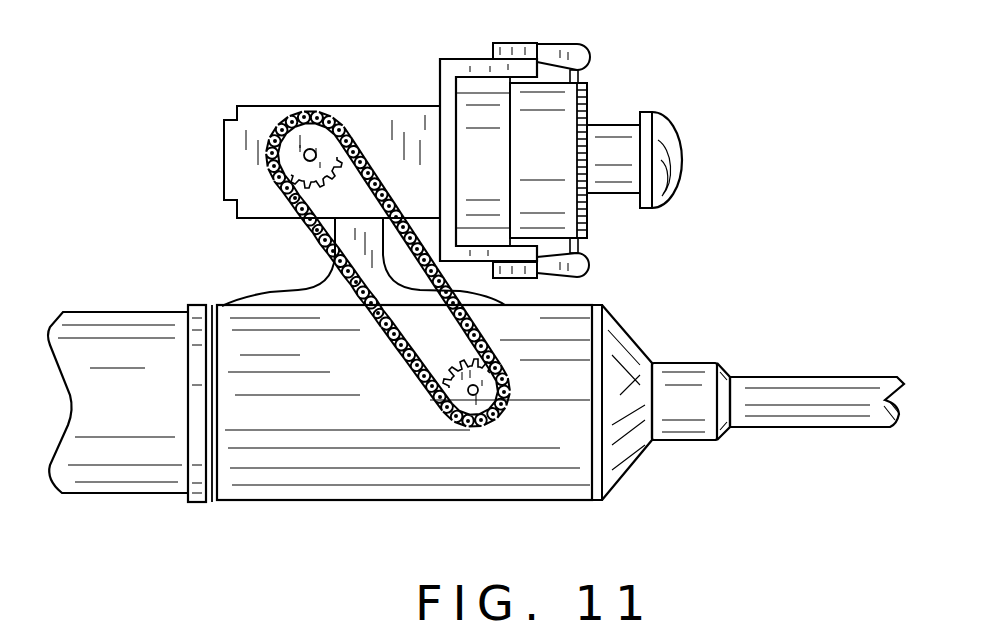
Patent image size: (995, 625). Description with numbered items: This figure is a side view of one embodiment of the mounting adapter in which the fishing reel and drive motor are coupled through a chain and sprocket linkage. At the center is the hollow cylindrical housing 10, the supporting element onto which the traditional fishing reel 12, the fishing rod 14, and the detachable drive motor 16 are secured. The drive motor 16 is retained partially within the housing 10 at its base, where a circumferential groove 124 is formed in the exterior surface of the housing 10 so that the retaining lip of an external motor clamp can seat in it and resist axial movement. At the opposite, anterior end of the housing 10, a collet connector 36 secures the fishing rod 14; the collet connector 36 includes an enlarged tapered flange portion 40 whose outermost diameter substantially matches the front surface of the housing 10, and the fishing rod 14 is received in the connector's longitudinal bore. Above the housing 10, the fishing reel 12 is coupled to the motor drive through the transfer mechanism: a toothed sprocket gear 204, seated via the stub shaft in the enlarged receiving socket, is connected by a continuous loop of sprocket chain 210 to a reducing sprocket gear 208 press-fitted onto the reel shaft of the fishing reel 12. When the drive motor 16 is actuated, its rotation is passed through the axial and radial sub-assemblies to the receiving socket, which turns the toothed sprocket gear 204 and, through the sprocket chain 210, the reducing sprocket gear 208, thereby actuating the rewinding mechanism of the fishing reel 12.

The hollow cylindrical housing 10 is at (413, 462).
The fishing reel 12 is at (368, 84).
The fishing rod 14 is at (778, 376).
The drive motor 16 is at (125, 478).
The collet connector 36 is at (678, 385).
The tapered flange portion 40 is at (618, 353).
The circumferential groove 124 is at (213, 490).
The toothed sprocket gear 204 is at (498, 422).
The reducing sprocket gear 208 is at (311, 133).
The sprocket chain 210 is at (403, 360).